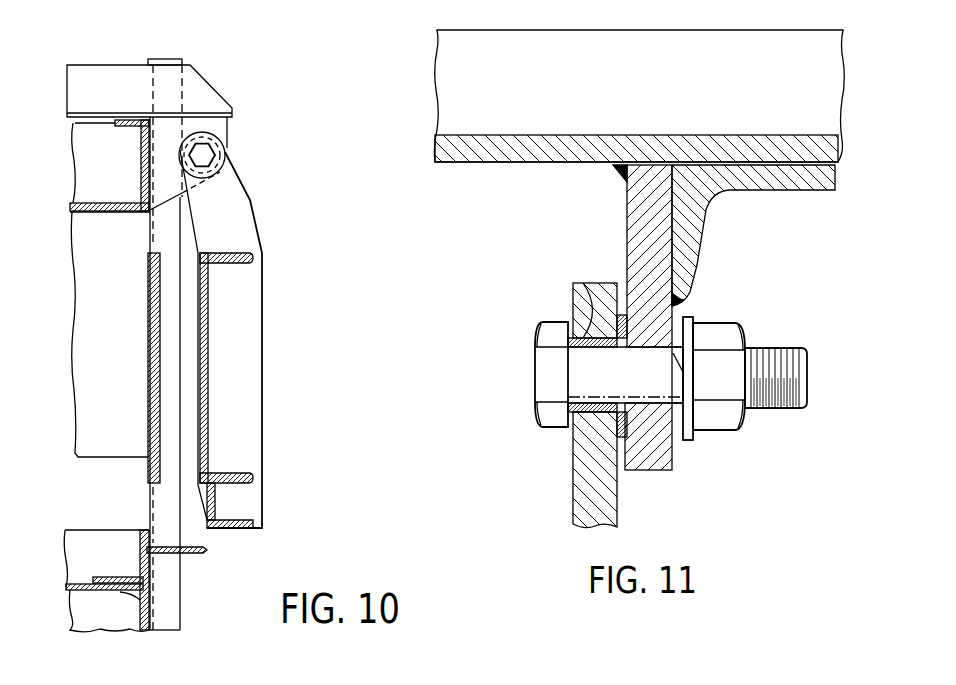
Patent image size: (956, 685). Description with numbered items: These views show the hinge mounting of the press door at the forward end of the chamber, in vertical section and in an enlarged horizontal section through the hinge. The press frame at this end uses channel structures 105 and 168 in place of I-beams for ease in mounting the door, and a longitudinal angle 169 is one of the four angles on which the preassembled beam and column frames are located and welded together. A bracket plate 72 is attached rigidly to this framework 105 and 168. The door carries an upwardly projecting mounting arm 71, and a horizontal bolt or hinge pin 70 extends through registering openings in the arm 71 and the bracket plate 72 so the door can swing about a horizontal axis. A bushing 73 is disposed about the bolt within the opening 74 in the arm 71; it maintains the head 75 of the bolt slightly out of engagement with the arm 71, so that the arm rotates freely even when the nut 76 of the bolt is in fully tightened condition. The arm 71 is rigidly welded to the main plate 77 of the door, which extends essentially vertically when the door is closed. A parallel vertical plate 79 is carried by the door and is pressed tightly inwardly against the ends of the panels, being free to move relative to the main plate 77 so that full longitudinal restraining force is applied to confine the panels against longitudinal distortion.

In FIG. 11, the hinge pin 70 is at (787, 407).
In FIG. 10, the mounting arm 71 is at (253, 217).
In FIG. 11, the mounting arm 71 is at (573, 485).
In FIG. 10, the bracket plate 72 is at (227, 133).
In FIG. 11, the bracket plate 72 is at (627, 217).
In FIG. 11, the bushing 73 is at (573, 297).
In FIG. 11, the opening 74 is at (573, 435).
In FIG. 11, the head 75 is at (537, 333).
In FIG. 11, the nut 76 is at (720, 413).
In FIG. 10, the main plate 77 is at (210, 322).
In FIG. 10, the vertical plate 79 is at (148, 358).
In FIG. 10, the channel structure 105 is at (141, 153).
In FIG. 11, the channel structure 105 is at (445, 89).
In FIG. 10, the channel structure 168 is at (170, 60).
In FIG. 11, the channel structure 168 is at (778, 193).
In FIG. 10, the longitudinal angle 169 is at (105, 63).